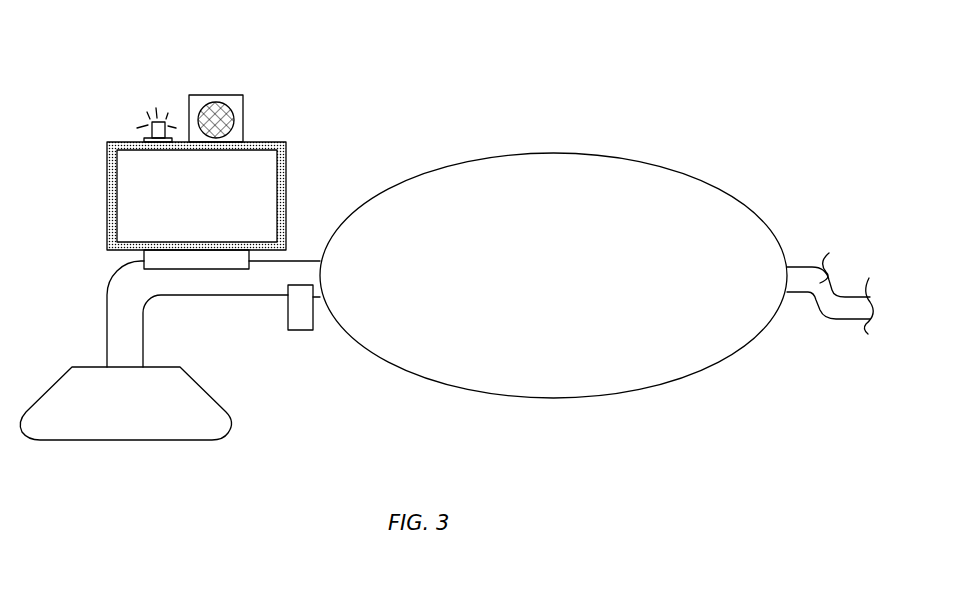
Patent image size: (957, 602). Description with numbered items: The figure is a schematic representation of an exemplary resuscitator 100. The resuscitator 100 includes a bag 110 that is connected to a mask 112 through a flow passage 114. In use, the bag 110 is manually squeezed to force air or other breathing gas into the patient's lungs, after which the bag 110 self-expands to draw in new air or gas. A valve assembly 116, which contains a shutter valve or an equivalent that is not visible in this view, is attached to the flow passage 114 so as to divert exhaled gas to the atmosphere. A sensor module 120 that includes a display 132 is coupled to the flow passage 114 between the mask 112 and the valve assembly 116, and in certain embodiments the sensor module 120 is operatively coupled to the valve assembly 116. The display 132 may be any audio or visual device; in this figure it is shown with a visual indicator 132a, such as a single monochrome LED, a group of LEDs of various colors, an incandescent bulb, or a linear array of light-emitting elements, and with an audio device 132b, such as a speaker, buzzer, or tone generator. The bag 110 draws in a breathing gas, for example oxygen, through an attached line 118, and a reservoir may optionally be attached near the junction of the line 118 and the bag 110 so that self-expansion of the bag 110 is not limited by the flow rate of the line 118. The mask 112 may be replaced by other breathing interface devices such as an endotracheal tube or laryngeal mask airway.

The resuscitator 100 is at (380, 74).
The bag 110 is at (635, 182).
The mask 112 is at (198, 411).
The flow passage 114 is at (117, 322).
The valve assembly 116 is at (301, 319).
The line 118 is at (830, 281).
The sensor module 120 is at (108, 102).
The display 132 is at (127, 183).
The visual indicator 132a is at (155, 120).
The audio device 132b is at (202, 98).